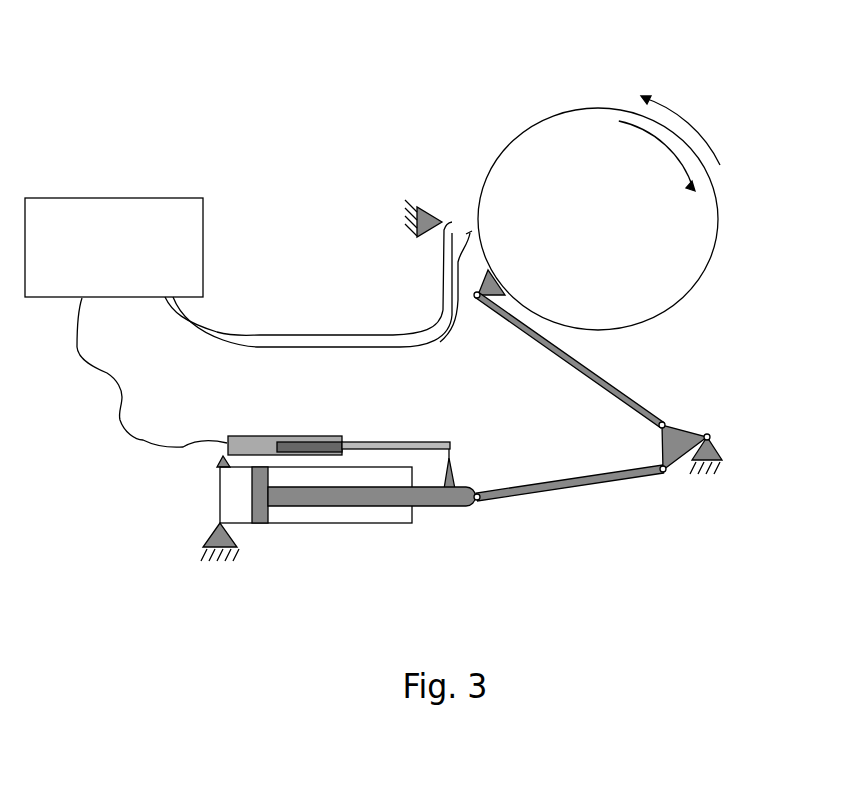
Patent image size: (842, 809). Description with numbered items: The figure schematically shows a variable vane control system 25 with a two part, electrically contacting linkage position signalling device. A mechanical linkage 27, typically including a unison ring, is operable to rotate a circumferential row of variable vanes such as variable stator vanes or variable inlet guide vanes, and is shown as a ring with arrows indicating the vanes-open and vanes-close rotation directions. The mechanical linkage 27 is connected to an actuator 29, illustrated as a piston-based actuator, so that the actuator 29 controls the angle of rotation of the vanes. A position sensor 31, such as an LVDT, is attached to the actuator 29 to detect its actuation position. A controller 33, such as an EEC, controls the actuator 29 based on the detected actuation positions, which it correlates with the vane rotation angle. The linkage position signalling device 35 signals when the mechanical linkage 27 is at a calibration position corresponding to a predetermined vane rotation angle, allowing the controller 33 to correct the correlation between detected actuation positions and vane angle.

The variable vane control system 25 is at (321, 128).
The mechanical linkage 27 is at (500, 112).
The actuator 29 is at (290, 525).
The position sensor 31 is at (298, 437).
The controller 33 is at (99, 250).
The linkage position signalling device 35 is at (425, 255).